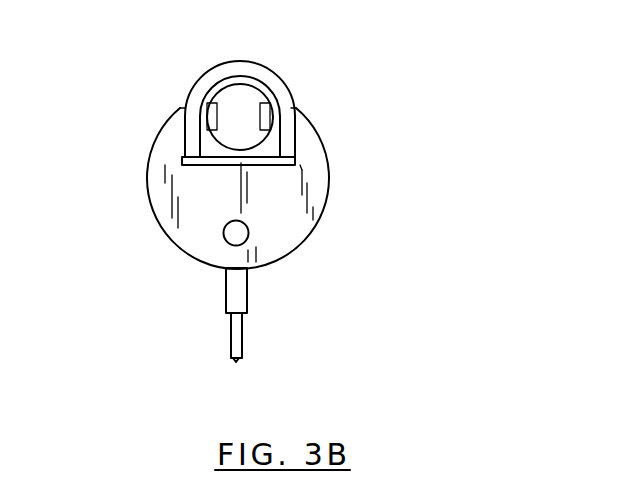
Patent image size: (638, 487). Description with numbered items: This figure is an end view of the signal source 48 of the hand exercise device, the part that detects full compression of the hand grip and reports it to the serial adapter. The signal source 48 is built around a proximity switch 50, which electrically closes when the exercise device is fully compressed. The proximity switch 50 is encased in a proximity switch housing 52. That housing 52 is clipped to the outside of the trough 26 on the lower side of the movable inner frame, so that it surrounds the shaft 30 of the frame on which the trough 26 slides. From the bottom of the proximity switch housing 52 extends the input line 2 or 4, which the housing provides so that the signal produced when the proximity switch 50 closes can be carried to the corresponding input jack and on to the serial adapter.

The input line 2 is at (289, 315).
The input line 4 is at (242, 343).
The trough 26 is at (229, 60).
The shaft 30 is at (226, 97).
The signal source 48 is at (136, 160).
The proximity switch 50 is at (227, 238).
The proximity switch housing 52 is at (315, 182).